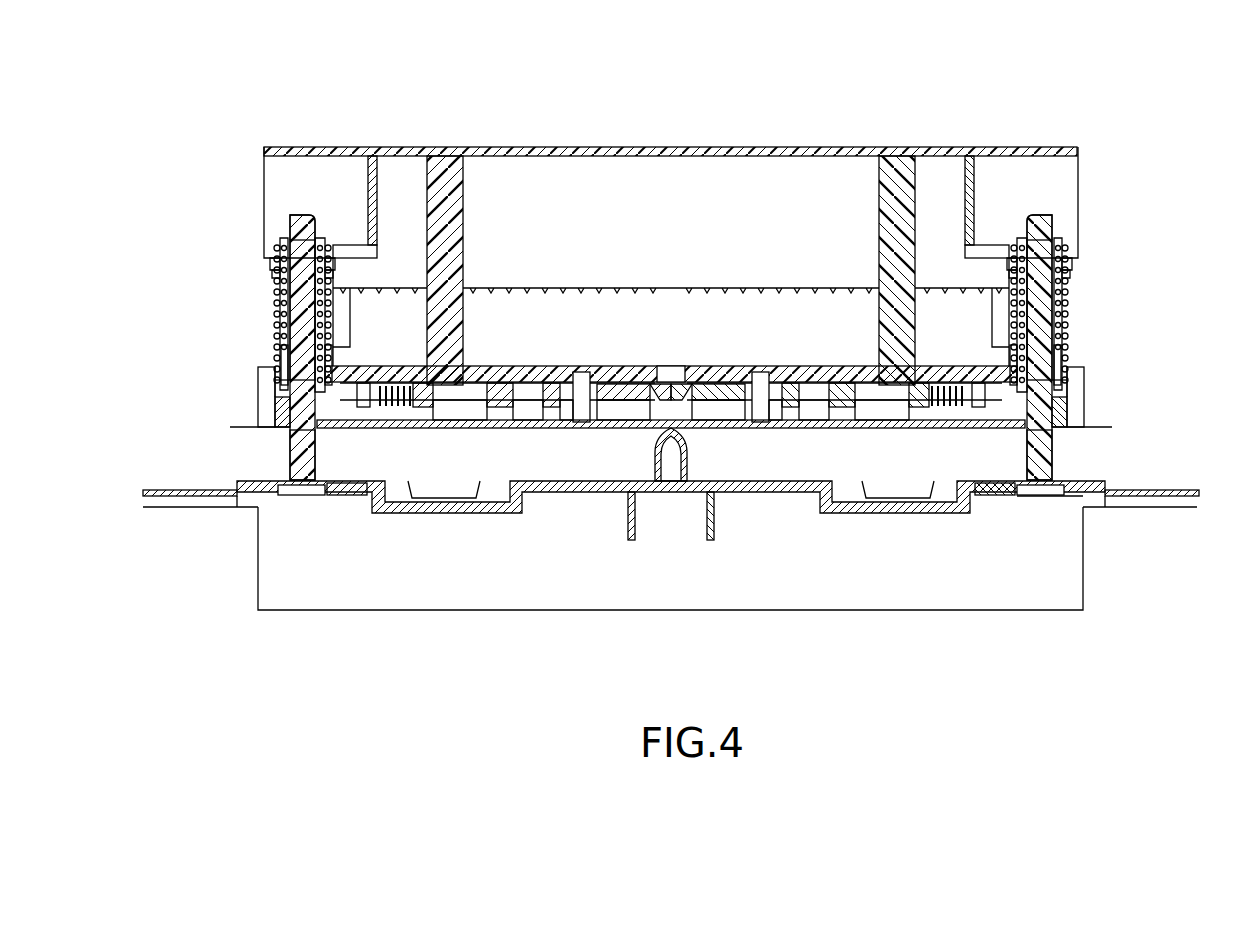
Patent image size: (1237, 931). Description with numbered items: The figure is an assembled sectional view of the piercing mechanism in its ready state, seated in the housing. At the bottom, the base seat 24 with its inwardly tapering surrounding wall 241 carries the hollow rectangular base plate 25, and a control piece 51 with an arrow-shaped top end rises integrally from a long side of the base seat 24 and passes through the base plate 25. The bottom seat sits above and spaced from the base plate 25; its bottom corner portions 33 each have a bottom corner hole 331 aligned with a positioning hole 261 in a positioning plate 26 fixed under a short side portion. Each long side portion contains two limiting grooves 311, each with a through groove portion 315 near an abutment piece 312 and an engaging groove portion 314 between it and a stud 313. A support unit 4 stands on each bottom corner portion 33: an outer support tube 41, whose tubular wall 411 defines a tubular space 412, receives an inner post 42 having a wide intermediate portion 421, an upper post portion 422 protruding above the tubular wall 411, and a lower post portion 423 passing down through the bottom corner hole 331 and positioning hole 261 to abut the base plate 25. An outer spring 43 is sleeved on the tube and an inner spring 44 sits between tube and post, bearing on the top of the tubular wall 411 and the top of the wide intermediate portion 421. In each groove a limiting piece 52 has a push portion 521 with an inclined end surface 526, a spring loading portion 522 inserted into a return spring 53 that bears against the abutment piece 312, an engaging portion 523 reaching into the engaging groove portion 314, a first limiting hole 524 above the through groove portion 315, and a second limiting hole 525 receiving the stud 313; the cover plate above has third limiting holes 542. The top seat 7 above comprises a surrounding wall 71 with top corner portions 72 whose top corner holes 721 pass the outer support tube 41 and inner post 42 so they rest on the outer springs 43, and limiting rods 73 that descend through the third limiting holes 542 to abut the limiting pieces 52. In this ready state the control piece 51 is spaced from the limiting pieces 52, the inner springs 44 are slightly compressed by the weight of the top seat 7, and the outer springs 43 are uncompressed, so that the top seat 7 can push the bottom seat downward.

The support unit 4 is at (297, 203).
The outer support tube 41 is at (272, 262).
The tubular wall 411 is at (285, 232).
The tubular space 412 is at (283, 255).
The inner post 42 is at (296, 317).
The wide intermediate portion 421 is at (297, 357).
The upper post portion 422 is at (283, 275).
The lower post portion 423 is at (300, 462).
The outer spring 43 is at (296, 335).
The inner spring 44 is at (280, 297).
The top seat 7 is at (698, 130).
The surrounding wall 71 is at (1062, 150).
The top corner portion 72 is at (354, 245).
The top corner hole 721 is at (345, 257).
The limiting rod 73 is at (447, 170).
The limiting piece 52 is at (547, 395).
The push portion 521 is at (660, 380).
The spring loading portion 522 is at (408, 385).
The engaging portion 523 is at (520, 390).
The first limiting hole 524 is at (495, 392).
The second limiting hole 525 is at (628, 395).
The inclined end surface 526 is at (632, 540).
The third limiting hole 542 is at (478, 367).
The control piece 51 is at (672, 470).
The return spring 53 is at (395, 503).
The limiting groove 311 is at (553, 430).
The abutment piece 312 is at (313, 495).
The stud 313 is at (590, 402).
The engaging groove portion 314 is at (500, 415).
The through groove portion 315 is at (440, 488).
The bottom corner portion 33 is at (272, 415).
The bottom corner hole 331 is at (270, 400).
The positioning plate 26 is at (287, 427).
The positioning hole 261 is at (290, 427).
The base seat 24 is at (1057, 583).
The surrounding wall 241 is at (1025, 497).
The base plate 25 is at (1185, 490).